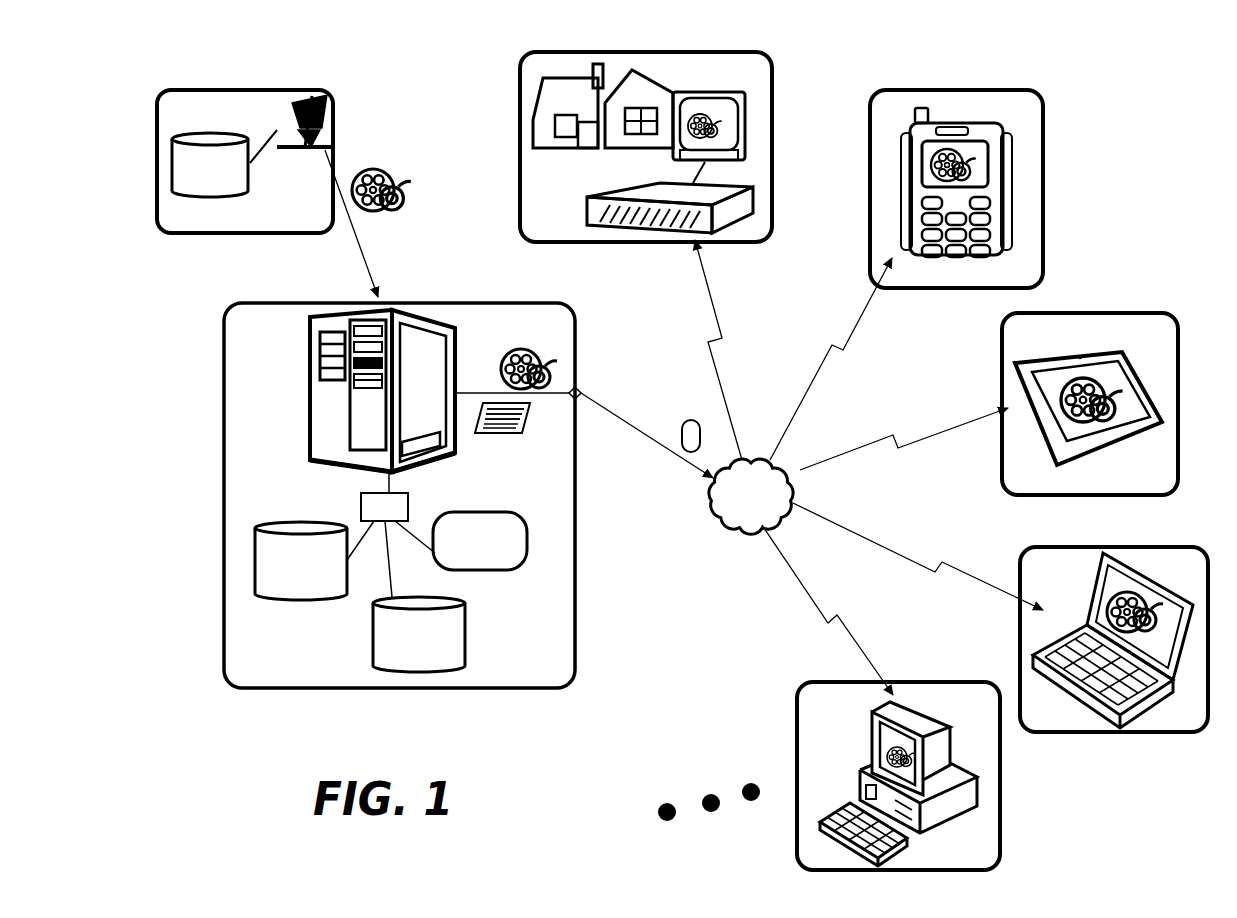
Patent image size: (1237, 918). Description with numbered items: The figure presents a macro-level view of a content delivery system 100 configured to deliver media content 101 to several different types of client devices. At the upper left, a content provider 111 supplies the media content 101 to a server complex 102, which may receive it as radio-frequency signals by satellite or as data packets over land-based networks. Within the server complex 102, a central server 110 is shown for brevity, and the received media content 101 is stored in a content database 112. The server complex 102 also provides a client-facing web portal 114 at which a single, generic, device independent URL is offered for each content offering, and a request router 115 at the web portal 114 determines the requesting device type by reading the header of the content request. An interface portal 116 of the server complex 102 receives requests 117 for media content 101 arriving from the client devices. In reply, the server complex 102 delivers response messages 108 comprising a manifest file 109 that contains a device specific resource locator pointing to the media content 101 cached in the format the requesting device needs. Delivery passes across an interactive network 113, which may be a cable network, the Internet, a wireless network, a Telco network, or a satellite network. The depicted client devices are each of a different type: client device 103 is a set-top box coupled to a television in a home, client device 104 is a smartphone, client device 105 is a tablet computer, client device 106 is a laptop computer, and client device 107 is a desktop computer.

The system 100 is at (206, 428).
The media content 101 is at (387, 212).
The server complex 102 is at (403, 302).
The client device 103 is at (519, 148).
The client device 104 is at (1045, 170).
The client device 105 is at (1000, 378).
The client device 106 is at (1115, 735).
The client device 107 is at (795, 750).
The response messages 108 is at (525, 426).
The manifest file 109 is at (505, 430).
The central server 110 is at (312, 368).
The content provider 111 is at (335, 110).
The content database 112 is at (275, 600).
The interactive network 113 is at (727, 510).
The web portal 114 is at (372, 510).
The request router 115 is at (478, 572).
The interface portal 116 is at (580, 393).
The requests 117 is at (690, 428).